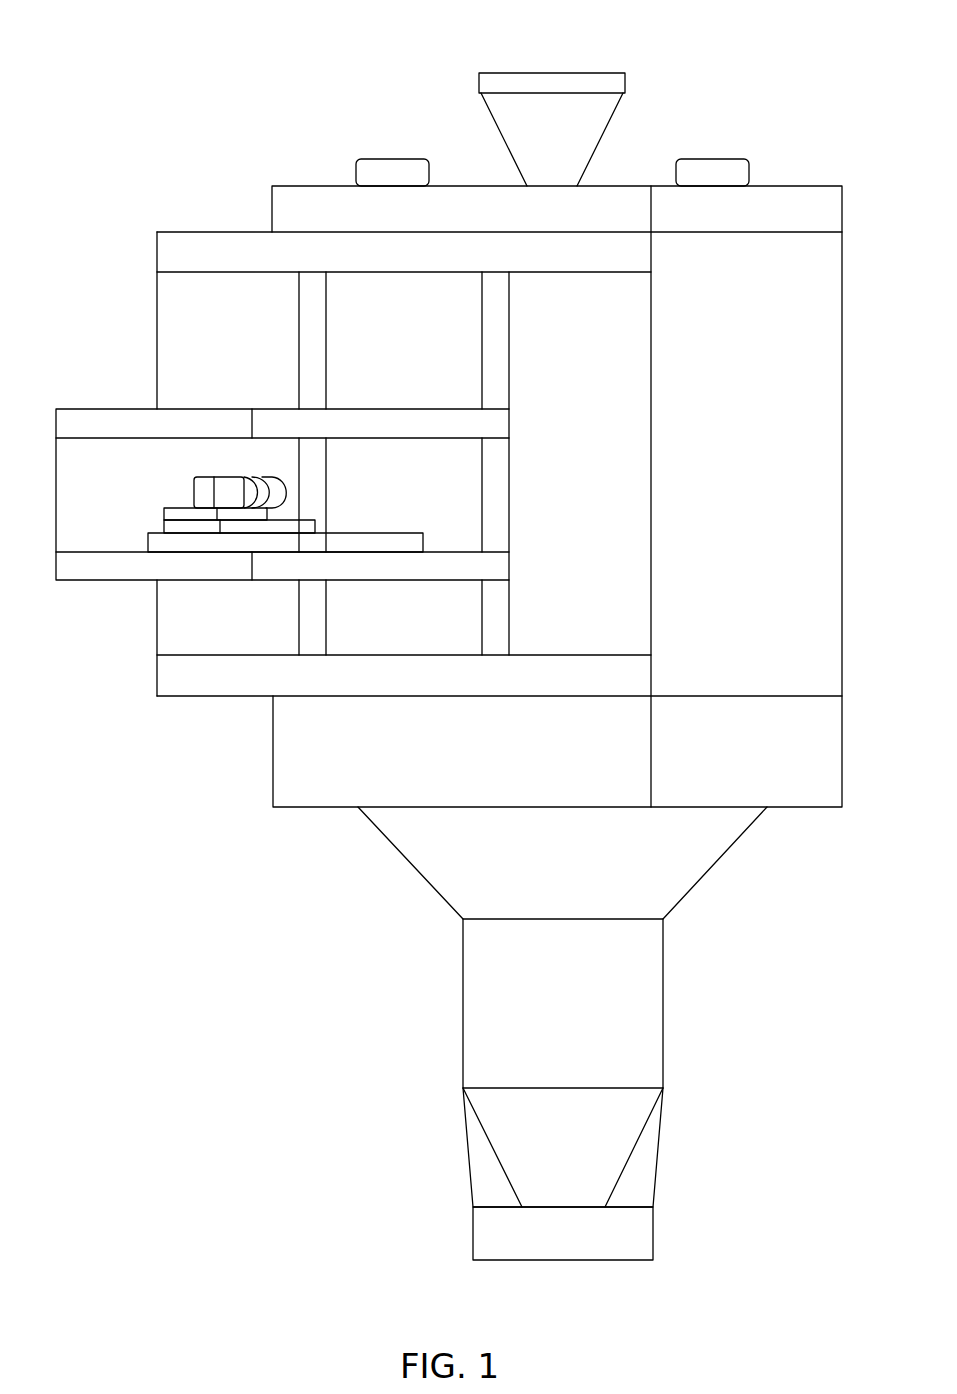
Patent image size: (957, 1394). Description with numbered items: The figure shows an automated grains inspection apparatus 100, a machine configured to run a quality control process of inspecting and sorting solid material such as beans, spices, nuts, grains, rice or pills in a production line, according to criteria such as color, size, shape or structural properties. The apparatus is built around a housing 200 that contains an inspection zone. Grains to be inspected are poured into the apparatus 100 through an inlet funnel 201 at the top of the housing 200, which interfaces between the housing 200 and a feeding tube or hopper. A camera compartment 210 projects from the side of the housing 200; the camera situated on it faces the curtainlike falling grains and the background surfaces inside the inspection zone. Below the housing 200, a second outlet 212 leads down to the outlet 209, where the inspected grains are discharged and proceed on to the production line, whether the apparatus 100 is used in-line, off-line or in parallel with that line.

The automated grains inspection apparatus 100 is at (760, 110).
The housing 200 is at (813, 808).
The inlet funnel 201 is at (483, 108).
The outlet 209 is at (470, 1170).
The camera compartment 210 is at (130, 584).
The second outlet 212 is at (463, 993).